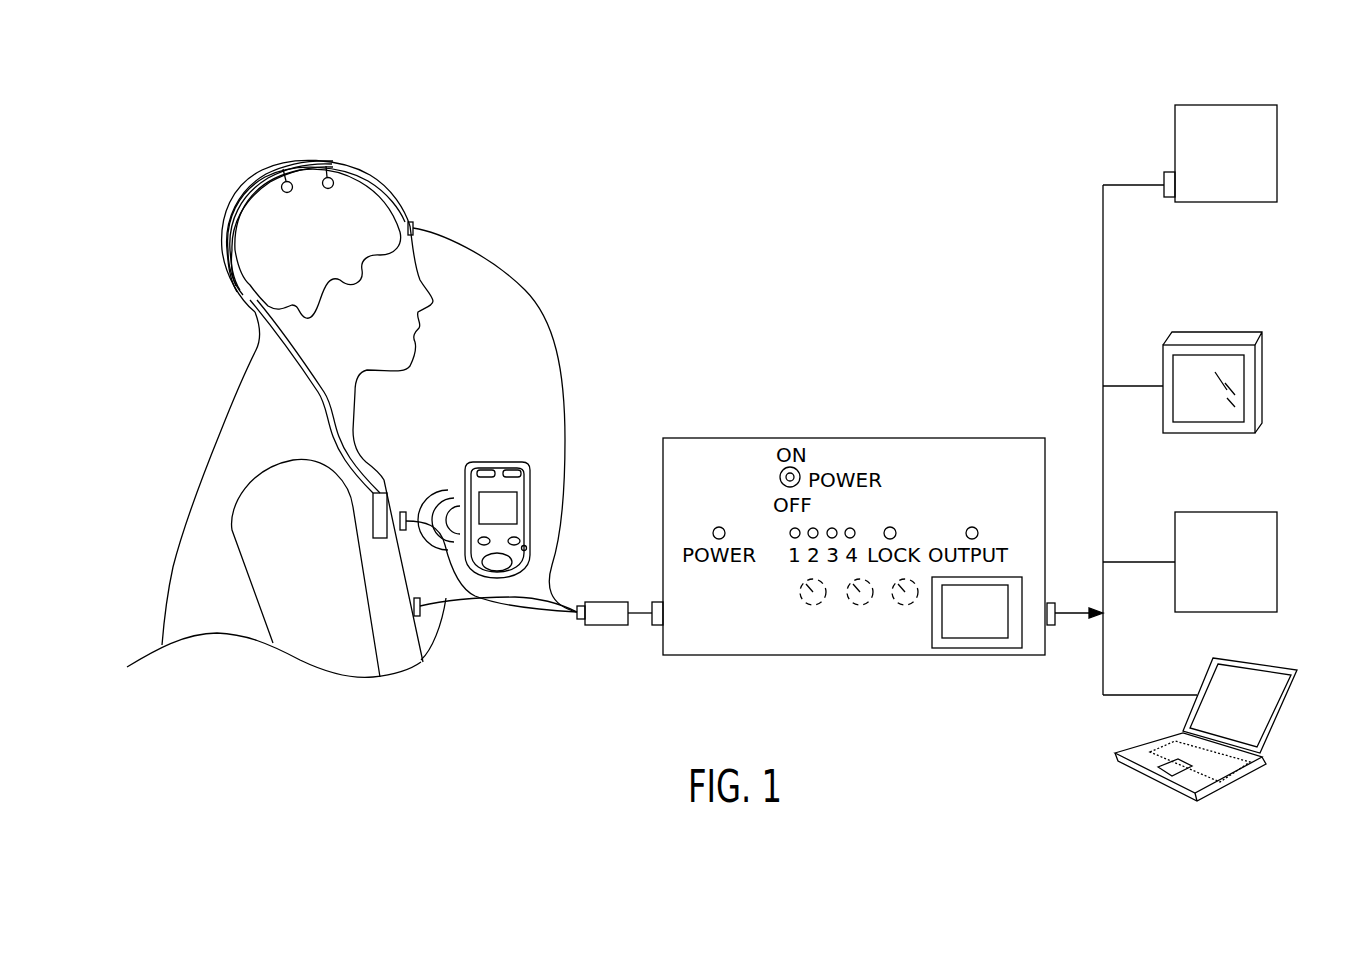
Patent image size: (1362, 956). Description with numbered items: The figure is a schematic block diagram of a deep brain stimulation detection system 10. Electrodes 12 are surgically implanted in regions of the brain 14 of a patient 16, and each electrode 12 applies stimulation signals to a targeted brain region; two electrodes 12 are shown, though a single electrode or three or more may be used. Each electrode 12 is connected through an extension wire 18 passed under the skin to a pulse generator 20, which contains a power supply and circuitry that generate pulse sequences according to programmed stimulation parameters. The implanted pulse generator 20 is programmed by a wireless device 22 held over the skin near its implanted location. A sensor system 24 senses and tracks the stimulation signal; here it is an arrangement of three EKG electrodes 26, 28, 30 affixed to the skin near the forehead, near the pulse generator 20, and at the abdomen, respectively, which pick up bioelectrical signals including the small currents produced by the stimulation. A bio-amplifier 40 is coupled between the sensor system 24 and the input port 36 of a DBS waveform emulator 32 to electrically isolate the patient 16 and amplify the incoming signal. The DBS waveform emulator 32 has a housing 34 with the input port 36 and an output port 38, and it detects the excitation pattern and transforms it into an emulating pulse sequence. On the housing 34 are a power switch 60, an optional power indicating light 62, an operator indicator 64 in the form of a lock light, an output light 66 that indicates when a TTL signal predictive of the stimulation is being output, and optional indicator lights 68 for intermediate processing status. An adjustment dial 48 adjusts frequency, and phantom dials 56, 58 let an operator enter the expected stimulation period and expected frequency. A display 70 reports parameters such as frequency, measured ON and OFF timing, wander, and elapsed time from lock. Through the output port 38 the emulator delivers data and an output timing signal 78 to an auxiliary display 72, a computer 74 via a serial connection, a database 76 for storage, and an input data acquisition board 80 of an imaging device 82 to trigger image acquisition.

The deep brain stimulation detection system 10 is at (200, 157).
The electrodes 12 is at (328, 189).
The brain 14 is at (372, 186).
The patient 16 is at (333, 164).
The extension wire 18 is at (318, 390).
The pulse generator 20 is at (380, 538).
The wireless device 22 is at (499, 462).
The sensor system 24 is at (483, 630).
The EKG electrode 26 is at (414, 224).
The EKG electrode 28 is at (404, 518).
The EKG electrode 30 is at (421, 607).
The DBS waveform emulator 32 is at (627, 455).
The housing 34 is at (962, 438).
The input port 36 is at (657, 602).
The output port 38 is at (1051, 603).
The bio-amplifier 40 is at (605, 625).
The adjustment dial 48 is at (818, 612).
The dial 56 is at (866, 612).
The dial 58 is at (910, 612).
The power switch 60 is at (779, 478).
The power indicating light 62 is at (720, 526).
The operator indicator 64 is at (890, 527).
The output light 66 is at (972, 527).
The indicator lights 68 is at (796, 528).
The display 70 is at (973, 638).
The auxiliary display 72 is at (1264, 373).
The computer 74 is at (1257, 663).
The database 76 is at (1277, 562).
The output timing signal 78 is at (1067, 618).
The input data acquisition board 80 is at (1169, 172).
The imaging device 82 is at (1225, 105).